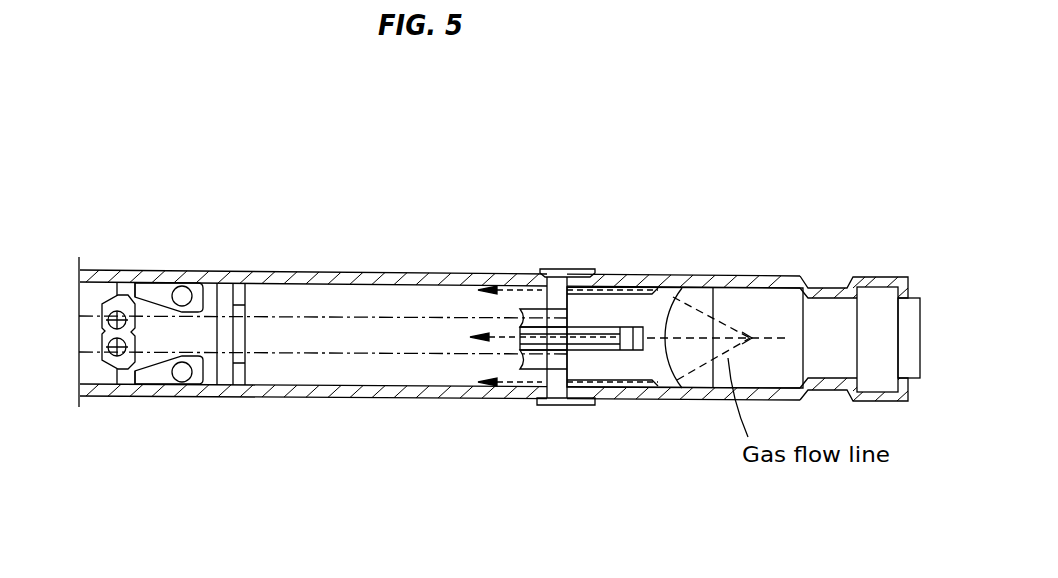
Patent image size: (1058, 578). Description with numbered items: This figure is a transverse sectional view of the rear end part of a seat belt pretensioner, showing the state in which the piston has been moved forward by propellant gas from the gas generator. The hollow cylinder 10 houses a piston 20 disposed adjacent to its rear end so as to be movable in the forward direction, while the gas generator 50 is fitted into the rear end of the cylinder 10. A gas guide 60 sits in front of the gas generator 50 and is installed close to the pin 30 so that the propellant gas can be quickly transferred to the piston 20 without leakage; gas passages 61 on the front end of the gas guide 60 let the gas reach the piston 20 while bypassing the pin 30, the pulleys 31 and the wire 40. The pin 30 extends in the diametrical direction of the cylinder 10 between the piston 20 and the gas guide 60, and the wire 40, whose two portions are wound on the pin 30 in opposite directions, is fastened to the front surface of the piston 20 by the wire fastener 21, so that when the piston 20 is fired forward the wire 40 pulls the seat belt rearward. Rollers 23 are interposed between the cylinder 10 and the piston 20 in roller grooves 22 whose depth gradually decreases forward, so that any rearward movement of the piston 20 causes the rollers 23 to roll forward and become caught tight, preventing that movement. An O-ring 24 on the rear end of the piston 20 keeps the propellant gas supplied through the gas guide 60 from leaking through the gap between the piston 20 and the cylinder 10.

The cylinder 10 is at (368, 279).
The piston 20 is at (150, 342).
The wire fastener 21 is at (103, 365).
The roller grooves 22 is at (150, 382).
The rollers 23 is at (183, 288).
The O-ring 24 is at (223, 378).
The pin 30 is at (556, 405).
The pulleys 31 is at (532, 316).
The wire 40 is at (310, 317).
The gas generator 50 is at (828, 322).
The gas guide 60 is at (685, 330).
The gas passages 61 is at (614, 293).